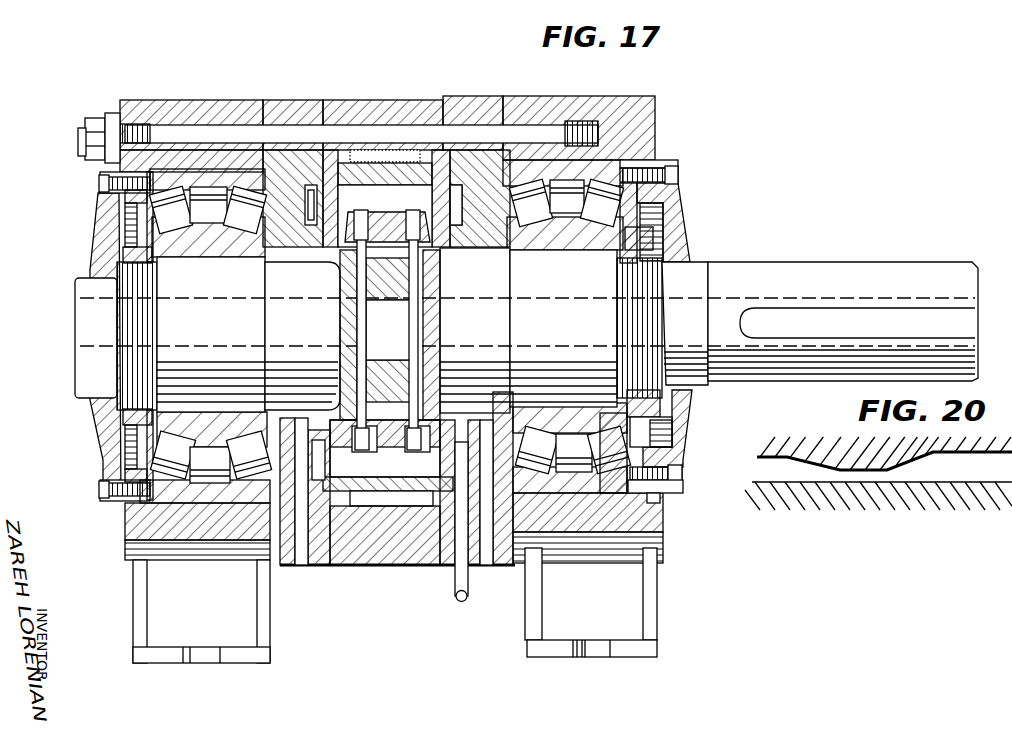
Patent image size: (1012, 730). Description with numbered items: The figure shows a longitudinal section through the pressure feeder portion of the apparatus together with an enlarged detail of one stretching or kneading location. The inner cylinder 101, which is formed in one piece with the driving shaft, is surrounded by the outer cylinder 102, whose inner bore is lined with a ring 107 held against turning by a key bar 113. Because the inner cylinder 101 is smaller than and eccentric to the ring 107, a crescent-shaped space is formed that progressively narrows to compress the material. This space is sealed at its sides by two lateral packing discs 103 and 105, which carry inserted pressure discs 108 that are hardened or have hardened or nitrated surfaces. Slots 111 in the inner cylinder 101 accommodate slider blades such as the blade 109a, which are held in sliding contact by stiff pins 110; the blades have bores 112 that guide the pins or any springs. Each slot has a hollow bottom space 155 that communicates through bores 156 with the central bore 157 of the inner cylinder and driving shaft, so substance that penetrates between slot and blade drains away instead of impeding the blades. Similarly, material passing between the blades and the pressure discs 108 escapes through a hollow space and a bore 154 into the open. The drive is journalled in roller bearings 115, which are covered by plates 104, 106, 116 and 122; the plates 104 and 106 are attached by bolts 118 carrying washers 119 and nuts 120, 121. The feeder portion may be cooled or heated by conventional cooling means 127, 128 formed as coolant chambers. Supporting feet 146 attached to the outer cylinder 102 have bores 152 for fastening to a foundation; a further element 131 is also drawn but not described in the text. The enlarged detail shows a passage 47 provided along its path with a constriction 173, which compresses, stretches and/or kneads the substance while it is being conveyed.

In FIG. 17, the inner cylinder 101 is at (780, 268).
In FIG. 17, the outer cylinder 102 is at (433, 566).
In FIG. 17, the packing disc 103 is at (278, 104).
In FIG. 17, the plate 104 is at (150, 104).
In FIG. 17, the packing disc 105 is at (490, 104).
In FIG. 17, the plate 106 is at (658, 104).
In FIG. 17, the ring 107 is at (398, 155).
In FIG. 17, the pressure disc 108 is at (386, 198).
In FIG. 17, the slider blade 109a is at (405, 203).
In FIG. 17, the stiff pin 110 is at (372, 350).
In FIG. 17, the slot 111 is at (344, 493).
In FIG. 17, the bore 112 is at (414, 448).
In FIG. 17, the key bar 113 is at (385, 510).
In FIG. 17, the roller bearing 115 is at (604, 160).
In FIG. 17, the plate 116 is at (92, 432).
In FIG. 17, the bolt 118 is at (203, 128).
In FIG. 17, the washer 119 is at (112, 114).
In FIG. 17, the nut 120 is at (96, 120).
In FIG. 17, the nut 121 is at (84, 153).
In FIG. 17, the plate 122 is at (678, 218).
In FIG. 17, the cooling means 127 is at (348, 150).
In FIG. 17, the cooling means 128 is at (462, 205).
In FIG. 17, the rod 131 is at (465, 602).
In FIG. 17, the supporting foot 146 is at (150, 662).
In FIG. 17, the bore 152 is at (216, 662).
In FIG. 17, the bore 154 is at (300, 567).
In FIG. 17, the hollow bottom space 155 is at (430, 272).
In FIG. 17, the bore 156 is at (357, 285).
In FIG. 17, the central bore 157 is at (348, 328).
In FIG. 20, the constriction 173 is at (867, 473).
In FIG. 20, the passage 47 is at (957, 477).